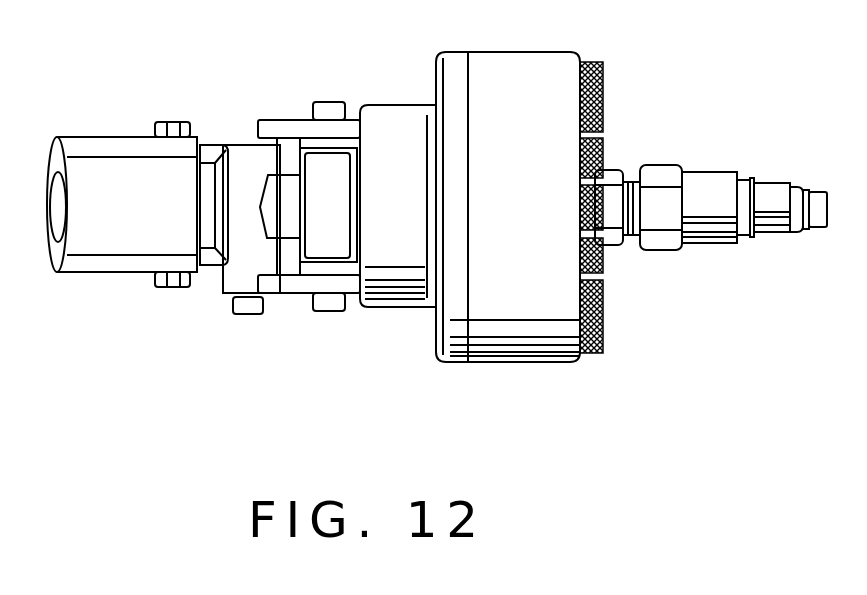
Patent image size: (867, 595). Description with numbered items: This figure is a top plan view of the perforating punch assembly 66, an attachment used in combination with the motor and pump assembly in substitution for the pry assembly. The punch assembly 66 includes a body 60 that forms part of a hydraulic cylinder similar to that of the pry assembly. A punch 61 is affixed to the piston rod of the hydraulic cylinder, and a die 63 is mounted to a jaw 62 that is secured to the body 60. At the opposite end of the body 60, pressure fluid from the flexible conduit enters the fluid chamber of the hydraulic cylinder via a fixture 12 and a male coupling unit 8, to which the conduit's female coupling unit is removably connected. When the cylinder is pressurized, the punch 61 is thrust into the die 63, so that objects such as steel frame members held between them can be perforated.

The male coupling unit 8 is at (710, 238).
The fixture 12 is at (632, 183).
The body 60 is at (517, 342).
The punch 61 is at (282, 192).
The jaw 62 is at (212, 277).
The die 63 is at (220, 192).
The perforating punch assembly 66 is at (388, 320).